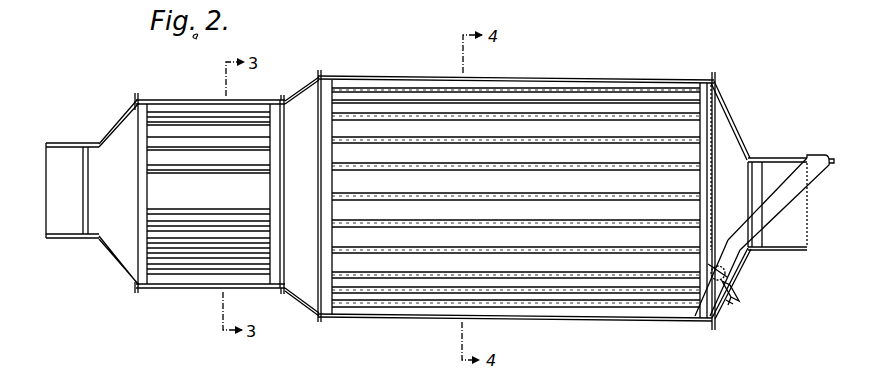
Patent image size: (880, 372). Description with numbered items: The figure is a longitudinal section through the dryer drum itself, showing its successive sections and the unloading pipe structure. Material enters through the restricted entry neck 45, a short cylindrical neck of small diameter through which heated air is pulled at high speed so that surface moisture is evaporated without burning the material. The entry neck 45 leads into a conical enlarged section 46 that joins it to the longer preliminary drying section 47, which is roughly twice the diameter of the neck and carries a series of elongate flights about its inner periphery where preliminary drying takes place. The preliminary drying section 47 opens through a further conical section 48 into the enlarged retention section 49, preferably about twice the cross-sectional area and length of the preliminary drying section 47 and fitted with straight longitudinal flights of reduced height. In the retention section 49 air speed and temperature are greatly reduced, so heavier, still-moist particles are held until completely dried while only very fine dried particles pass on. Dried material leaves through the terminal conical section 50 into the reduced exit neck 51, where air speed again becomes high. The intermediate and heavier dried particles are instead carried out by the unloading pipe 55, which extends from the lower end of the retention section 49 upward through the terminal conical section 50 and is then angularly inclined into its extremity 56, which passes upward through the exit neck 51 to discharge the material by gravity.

The entry neck 45 is at (63, 143).
The conical enlarged section 46 is at (111, 259).
The preliminary drying section 47 is at (182, 290).
The conical section 48 is at (299, 300).
The retention section 49 is at (560, 321).
The terminal conical section 50 is at (728, 110).
The exit neck 51 is at (780, 157).
The unloading pipe 55 is at (727, 238).
The angular extremity 56 is at (785, 207).